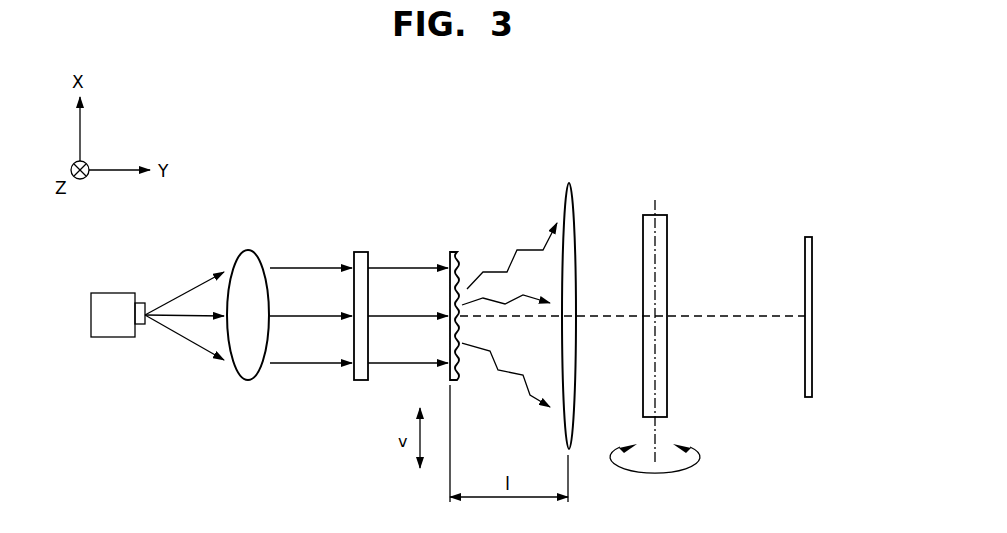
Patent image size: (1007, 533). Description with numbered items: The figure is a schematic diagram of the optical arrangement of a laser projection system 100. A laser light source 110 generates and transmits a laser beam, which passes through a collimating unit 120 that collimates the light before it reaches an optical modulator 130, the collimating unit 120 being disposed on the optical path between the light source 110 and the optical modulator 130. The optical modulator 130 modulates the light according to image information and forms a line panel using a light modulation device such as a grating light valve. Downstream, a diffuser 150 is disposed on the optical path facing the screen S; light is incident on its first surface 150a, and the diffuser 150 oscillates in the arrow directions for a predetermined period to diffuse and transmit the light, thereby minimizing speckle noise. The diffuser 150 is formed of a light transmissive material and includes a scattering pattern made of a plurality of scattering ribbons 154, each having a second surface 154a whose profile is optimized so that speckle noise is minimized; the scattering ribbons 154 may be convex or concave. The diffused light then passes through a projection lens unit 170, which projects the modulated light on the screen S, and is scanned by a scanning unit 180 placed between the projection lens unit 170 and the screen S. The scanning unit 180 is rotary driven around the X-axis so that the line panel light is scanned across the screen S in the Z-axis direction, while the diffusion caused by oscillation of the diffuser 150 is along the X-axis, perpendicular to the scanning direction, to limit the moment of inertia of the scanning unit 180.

The laser projection system 100 is at (699, 108).
The laser light source 110 is at (114, 298).
The collimating unit 120 is at (247, 257).
The optical modulator 130 is at (359, 257).
The diffuser 150 is at (447, 243).
The first surface 150a is at (446, 373).
The scattering ribbons 154 is at (462, 266).
The second surface 154a is at (458, 262).
The projection lens unit 170 is at (563, 190).
The scanning unit 180 is at (650, 222).
The screen S is at (809, 235).